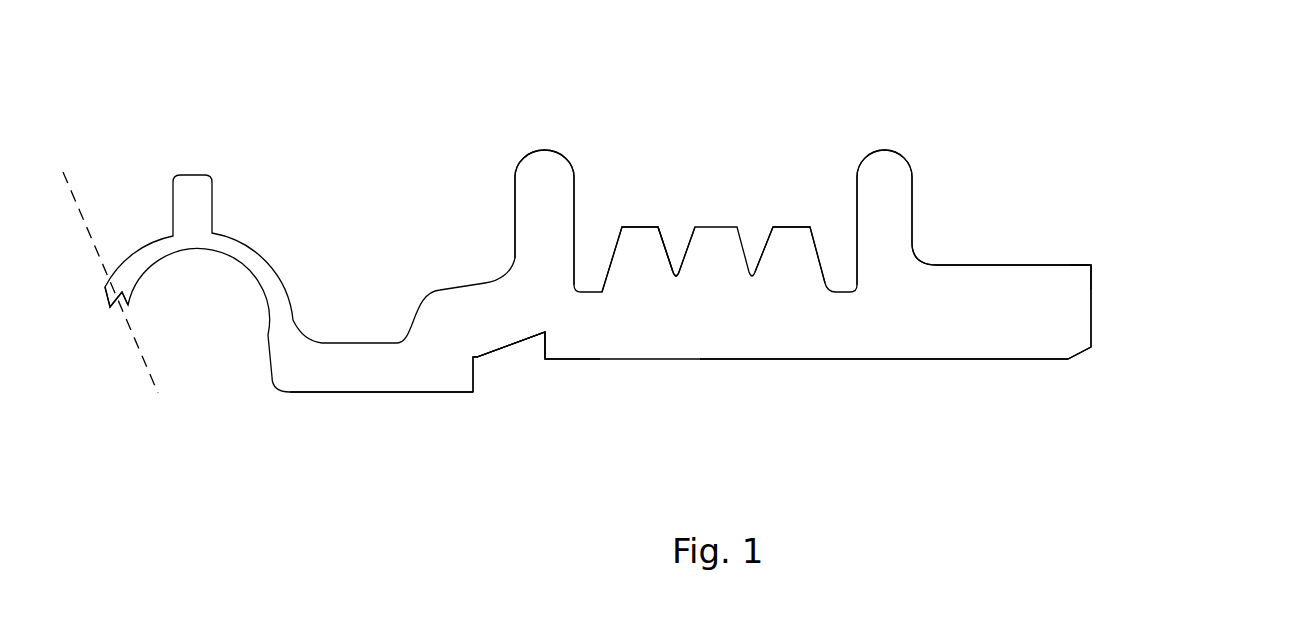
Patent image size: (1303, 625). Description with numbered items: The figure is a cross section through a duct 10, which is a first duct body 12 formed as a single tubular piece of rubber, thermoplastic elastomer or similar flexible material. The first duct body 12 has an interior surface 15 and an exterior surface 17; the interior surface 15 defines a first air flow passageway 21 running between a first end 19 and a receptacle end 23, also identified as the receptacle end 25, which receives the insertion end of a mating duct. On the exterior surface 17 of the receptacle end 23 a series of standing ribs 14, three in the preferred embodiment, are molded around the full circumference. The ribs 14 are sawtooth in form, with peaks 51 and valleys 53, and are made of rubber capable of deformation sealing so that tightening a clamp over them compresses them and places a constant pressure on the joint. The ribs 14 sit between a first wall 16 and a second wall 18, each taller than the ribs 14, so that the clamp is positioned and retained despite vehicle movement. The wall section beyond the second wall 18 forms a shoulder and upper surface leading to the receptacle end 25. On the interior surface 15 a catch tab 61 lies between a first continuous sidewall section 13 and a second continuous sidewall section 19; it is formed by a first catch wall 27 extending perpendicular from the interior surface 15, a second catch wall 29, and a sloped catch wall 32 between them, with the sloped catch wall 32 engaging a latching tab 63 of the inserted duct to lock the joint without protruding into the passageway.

The duct 10 is at (1085, 211).
The first duct body 12 is at (1122, 307).
The first continuous sidewall section 13 is at (370, 408).
The ribs 14 is at (641, 204).
The interior surface 15 is at (1064, 376).
The first wall 16 is at (898, 126).
The exterior surface 17 is at (991, 245).
The second wall 18 is at (554, 126).
The first end 19 is at (116, 241).
The first air flow passageway 21 is at (1132, 487).
The receptacle end 23 is at (931, 244).
The receptacle end 25 is at (1108, 272).
The first catch wall 27 is at (481, 386).
The second catch wall 29 is at (540, 367).
The sloped catch wall 32 is at (502, 365).
The peaks 51 is at (792, 206).
The valleys 53 is at (679, 244).
The catch tab 61 is at (527, 383).
The latching tab 63 is at (505, 329).